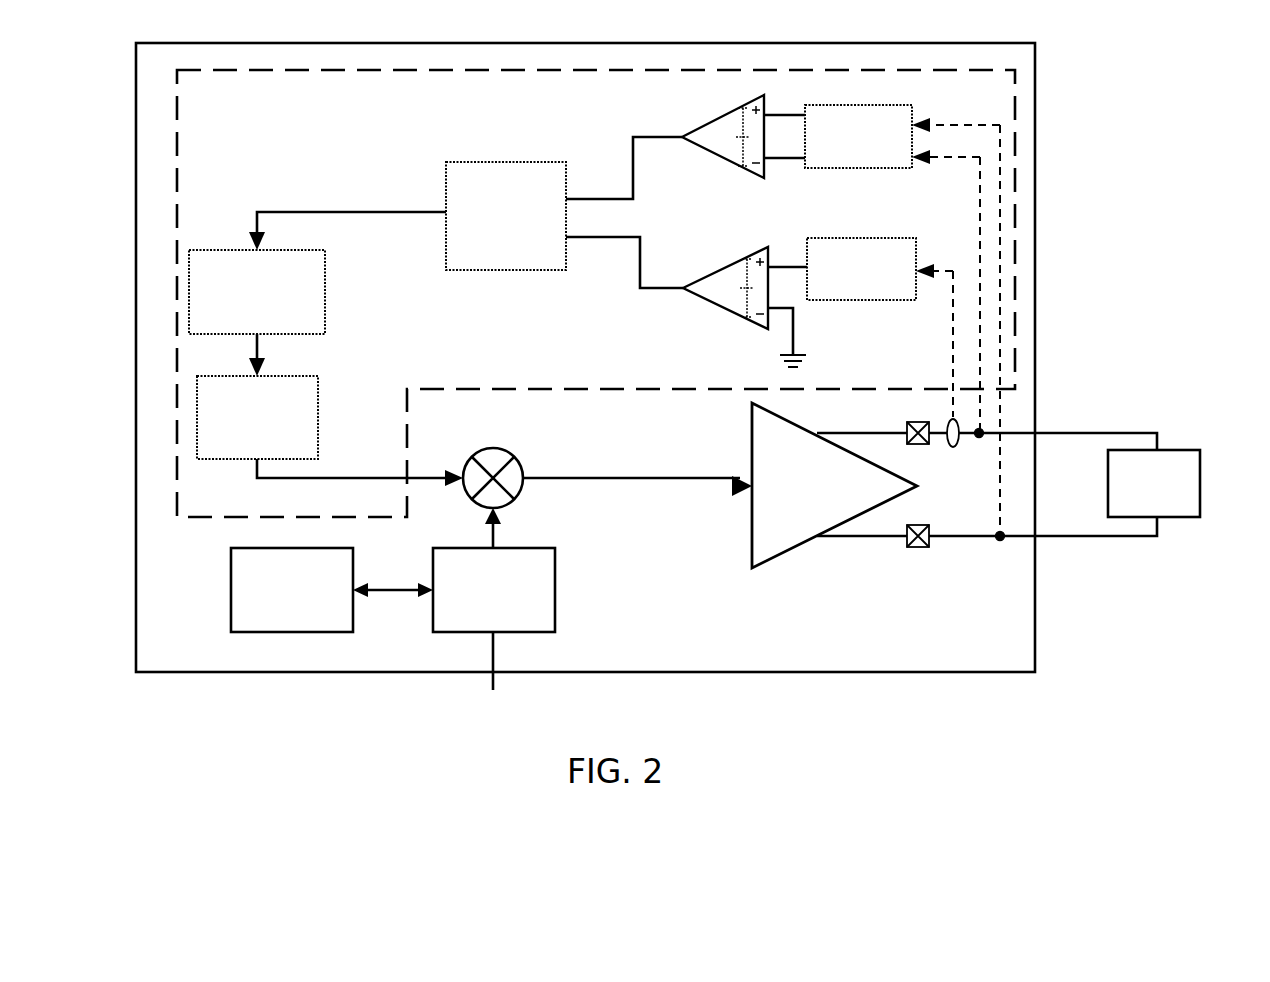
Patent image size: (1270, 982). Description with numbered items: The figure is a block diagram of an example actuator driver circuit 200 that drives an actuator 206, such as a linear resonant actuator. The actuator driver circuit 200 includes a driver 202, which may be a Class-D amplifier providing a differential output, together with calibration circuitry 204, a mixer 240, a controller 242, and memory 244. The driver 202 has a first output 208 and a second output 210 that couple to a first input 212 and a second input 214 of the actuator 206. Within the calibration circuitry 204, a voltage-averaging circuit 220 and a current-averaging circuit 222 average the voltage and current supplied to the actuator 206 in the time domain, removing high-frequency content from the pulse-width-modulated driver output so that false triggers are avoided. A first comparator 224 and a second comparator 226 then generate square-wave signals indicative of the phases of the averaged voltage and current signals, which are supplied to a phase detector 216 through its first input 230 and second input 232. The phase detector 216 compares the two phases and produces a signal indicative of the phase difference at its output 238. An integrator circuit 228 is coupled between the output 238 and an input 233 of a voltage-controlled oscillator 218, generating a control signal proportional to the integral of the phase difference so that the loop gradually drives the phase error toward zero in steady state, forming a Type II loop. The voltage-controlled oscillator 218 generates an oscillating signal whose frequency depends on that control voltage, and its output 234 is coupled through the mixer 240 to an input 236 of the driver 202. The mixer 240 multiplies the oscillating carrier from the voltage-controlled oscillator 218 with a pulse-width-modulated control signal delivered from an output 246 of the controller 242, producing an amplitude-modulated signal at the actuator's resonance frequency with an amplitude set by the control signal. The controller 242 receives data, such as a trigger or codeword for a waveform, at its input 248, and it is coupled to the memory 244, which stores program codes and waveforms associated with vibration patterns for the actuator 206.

The actuator driver circuit 200 is at (340, 43).
The driver 202 is at (760, 425).
The calibration circuitry 204 is at (687, 70).
The actuator 206 is at (1197, 485).
The first output 208 is at (878, 433).
The second output 210 is at (886, 537).
The first input 212 is at (1120, 433).
The second input 214 is at (1120, 537).
The phase detector 216 is at (508, 162).
The voltage-controlled oscillator 218 is at (318, 396).
The voltage-averaging circuit 220 is at (882, 105).
The current-averaging circuit 222 is at (893, 238).
The first comparator 224 is at (718, 120).
The second comparator 226 is at (730, 270).
The integrator circuit 228 is at (325, 285).
The first input 230 is at (598, 199).
The second input 232 is at (597, 237).
The input 233 is at (262, 346).
The output 234 is at (298, 478).
The input 236 is at (648, 478).
The output 238 is at (355, 212).
The mixer 240 is at (506, 454).
The controller 242 is at (556, 590).
The memory 244 is at (285, 632).
The output 246 is at (495, 534).
The input 248 is at (495, 660).